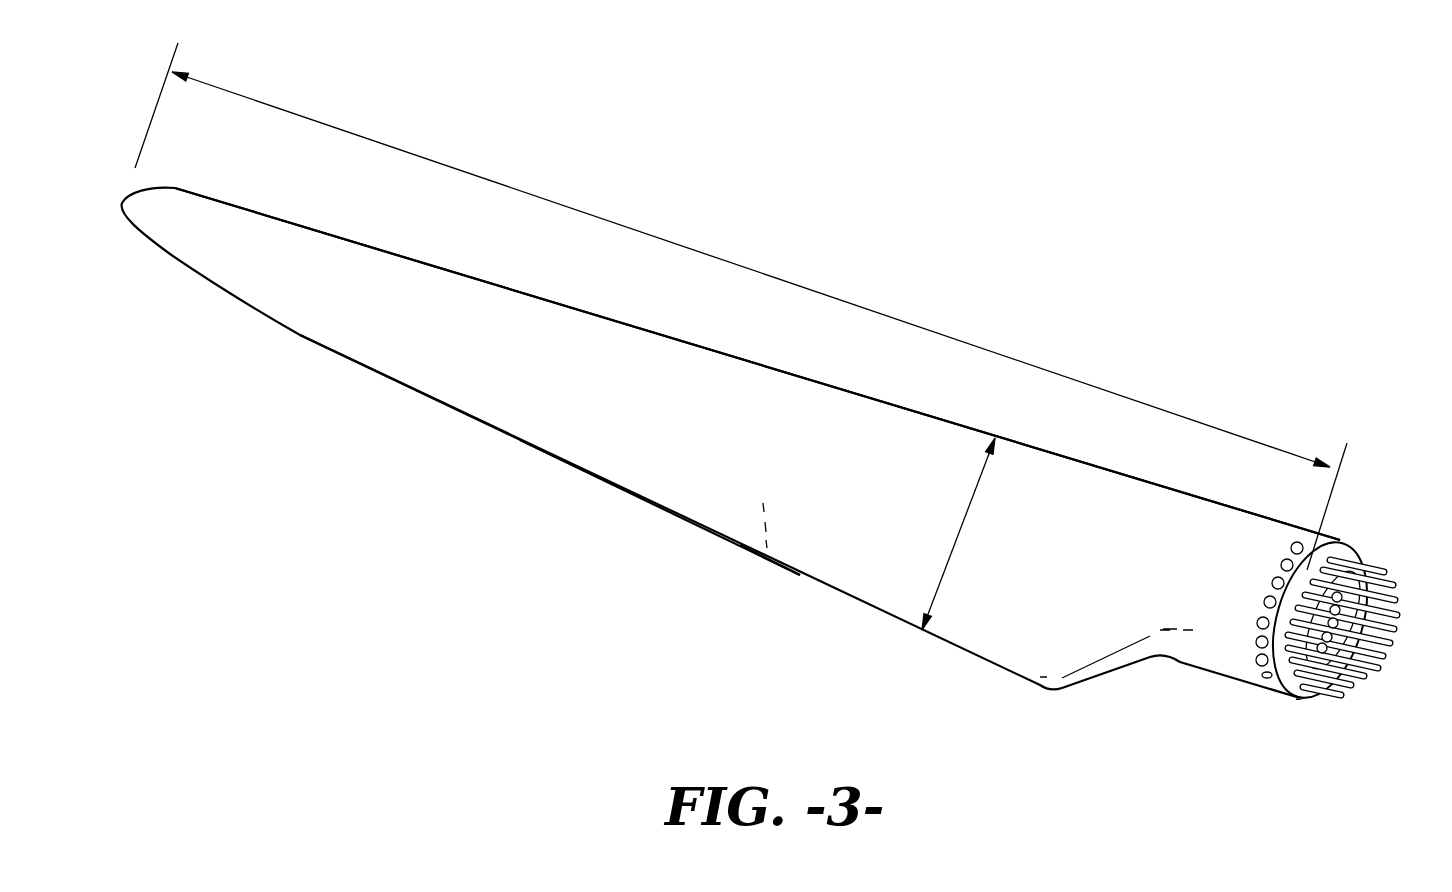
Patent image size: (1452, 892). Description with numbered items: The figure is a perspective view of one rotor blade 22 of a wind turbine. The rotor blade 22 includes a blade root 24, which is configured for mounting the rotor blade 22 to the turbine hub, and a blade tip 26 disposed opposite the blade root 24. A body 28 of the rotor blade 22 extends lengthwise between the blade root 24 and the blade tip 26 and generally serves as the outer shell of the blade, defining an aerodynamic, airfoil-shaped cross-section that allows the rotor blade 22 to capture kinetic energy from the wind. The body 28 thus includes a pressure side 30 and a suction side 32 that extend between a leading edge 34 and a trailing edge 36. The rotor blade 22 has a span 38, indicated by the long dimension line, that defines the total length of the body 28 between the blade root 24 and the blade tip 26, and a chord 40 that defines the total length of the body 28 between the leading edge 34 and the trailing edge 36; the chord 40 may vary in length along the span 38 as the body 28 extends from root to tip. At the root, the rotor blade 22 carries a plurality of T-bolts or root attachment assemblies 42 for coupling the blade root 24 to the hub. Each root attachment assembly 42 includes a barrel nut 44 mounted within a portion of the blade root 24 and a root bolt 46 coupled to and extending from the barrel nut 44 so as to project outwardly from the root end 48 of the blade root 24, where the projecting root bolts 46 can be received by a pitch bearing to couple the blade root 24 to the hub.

The rotor blade 22 is at (1192, 295).
The blade root 24 is at (1250, 670).
The blade tip 26 is at (120, 203).
The body 28 is at (586, 350).
The pressure side 30 is at (765, 553).
The suction side 32 is at (462, 370).
The leading edge 34 is at (815, 380).
The trailing edge 36 is at (595, 477).
The span 38 is at (793, 280).
The chord 40 is at (953, 547).
The root attachment assembly 42 is at (1247, 617).
The barrel nut 44 is at (1283, 565).
The root bolt 46 is at (1393, 607).
The root end 48 is at (1307, 693).